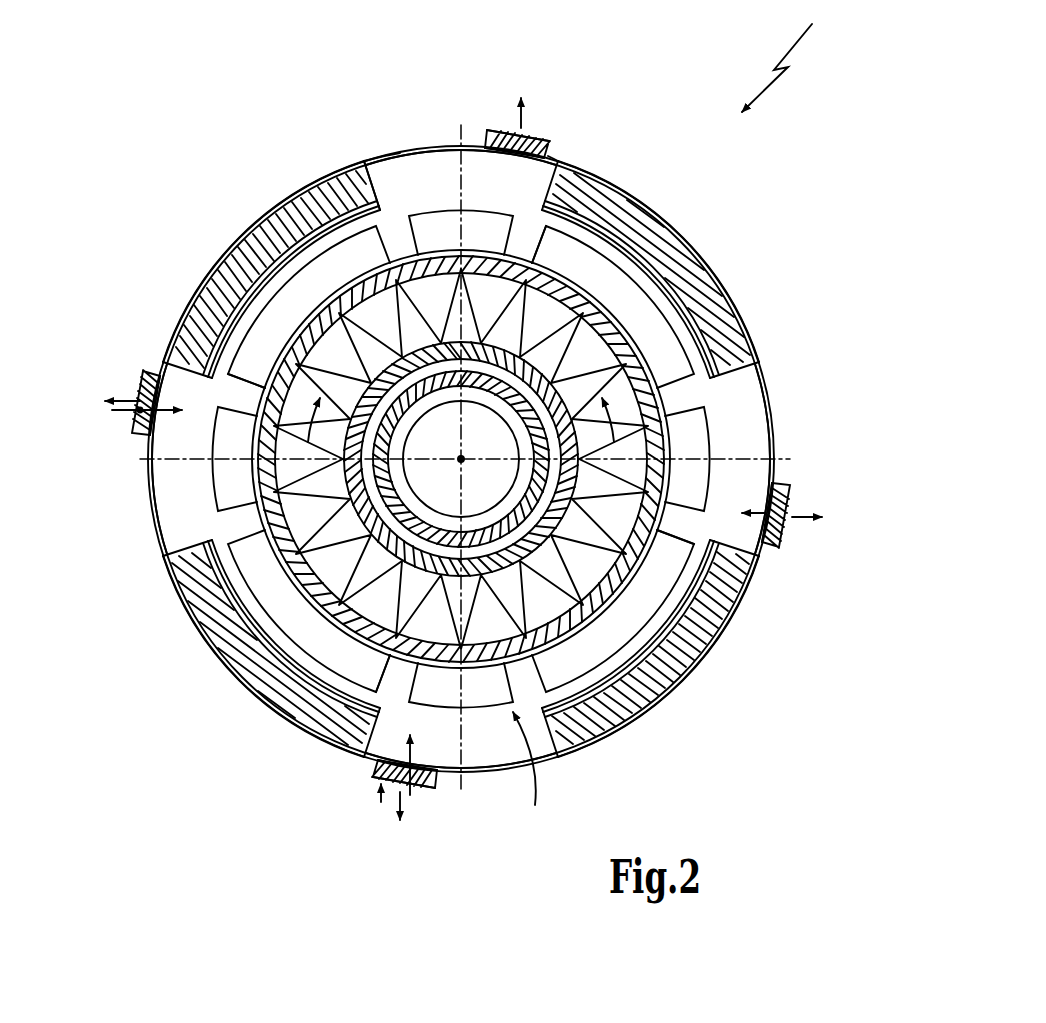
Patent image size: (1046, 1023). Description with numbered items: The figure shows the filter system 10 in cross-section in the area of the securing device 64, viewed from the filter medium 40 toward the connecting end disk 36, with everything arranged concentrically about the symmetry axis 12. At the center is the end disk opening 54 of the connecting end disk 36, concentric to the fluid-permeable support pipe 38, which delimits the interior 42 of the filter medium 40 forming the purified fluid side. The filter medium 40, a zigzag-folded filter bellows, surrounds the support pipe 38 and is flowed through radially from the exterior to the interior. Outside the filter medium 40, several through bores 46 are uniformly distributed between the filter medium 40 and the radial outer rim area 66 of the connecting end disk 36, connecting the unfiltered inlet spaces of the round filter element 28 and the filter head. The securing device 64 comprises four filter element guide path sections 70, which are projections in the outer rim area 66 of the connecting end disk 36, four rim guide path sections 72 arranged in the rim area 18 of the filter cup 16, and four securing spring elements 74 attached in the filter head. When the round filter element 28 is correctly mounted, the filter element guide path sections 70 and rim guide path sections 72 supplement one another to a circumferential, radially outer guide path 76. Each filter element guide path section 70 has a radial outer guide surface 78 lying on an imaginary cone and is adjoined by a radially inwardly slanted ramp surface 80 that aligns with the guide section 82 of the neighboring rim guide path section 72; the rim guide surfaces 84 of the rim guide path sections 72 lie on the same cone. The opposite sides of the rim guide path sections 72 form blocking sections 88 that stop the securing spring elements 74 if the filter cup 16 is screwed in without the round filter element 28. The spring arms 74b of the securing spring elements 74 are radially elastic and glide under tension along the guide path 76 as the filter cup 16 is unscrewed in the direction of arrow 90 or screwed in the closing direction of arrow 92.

The filter system 10 is at (790, 59).
The symmetry axis 12 is at (463, 462).
The filter cup 16 is at (215, 252).
The rim area 18 is at (268, 200).
The round filter element 28 is at (529, 774).
The connecting end disk 36 is at (702, 393).
The support pipe 38 is at (423, 532).
The filter medium 40 is at (607, 576).
The interior 42 is at (461, 459).
The through bores 46 is at (150, 512).
The end disk opening 54 is at (461, 459).
The securing device 64 is at (570, 148).
The radial outer rim area 66 is at (400, 185).
The filter element guide path sections 70 is at (443, 172).
The rim guide path sections 72 is at (693, 267).
The securing spring elements 74 is at (503, 127).
The spring arm 74b is at (548, 138).
The guide path 76 is at (350, 172).
The guide surface 78 is at (513, 170).
The ramp surface 80 is at (402, 192).
The guide sections 82 is at (752, 340).
The rim guide surfaces 84 is at (657, 207).
The blocking sections 88 is at (568, 182).
The arrow 90 is at (300, 476).
The arrow 92 is at (625, 478).